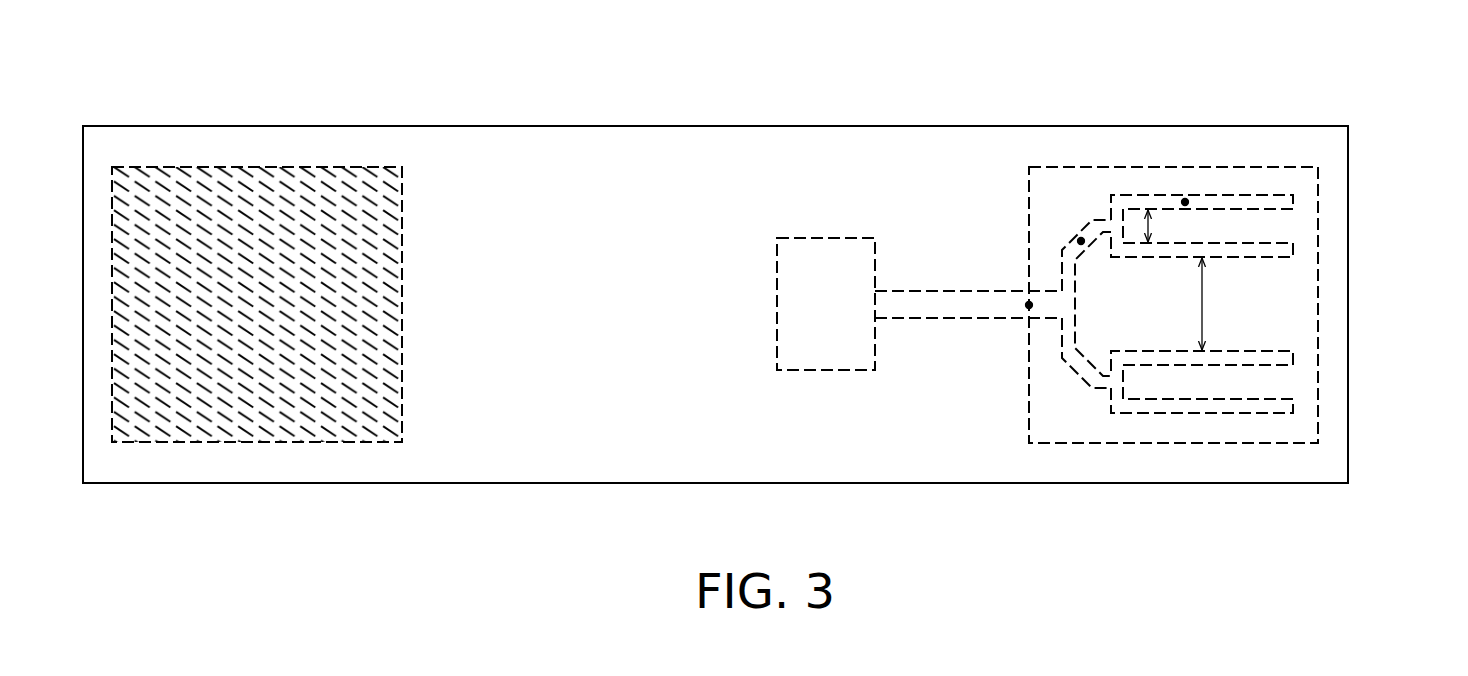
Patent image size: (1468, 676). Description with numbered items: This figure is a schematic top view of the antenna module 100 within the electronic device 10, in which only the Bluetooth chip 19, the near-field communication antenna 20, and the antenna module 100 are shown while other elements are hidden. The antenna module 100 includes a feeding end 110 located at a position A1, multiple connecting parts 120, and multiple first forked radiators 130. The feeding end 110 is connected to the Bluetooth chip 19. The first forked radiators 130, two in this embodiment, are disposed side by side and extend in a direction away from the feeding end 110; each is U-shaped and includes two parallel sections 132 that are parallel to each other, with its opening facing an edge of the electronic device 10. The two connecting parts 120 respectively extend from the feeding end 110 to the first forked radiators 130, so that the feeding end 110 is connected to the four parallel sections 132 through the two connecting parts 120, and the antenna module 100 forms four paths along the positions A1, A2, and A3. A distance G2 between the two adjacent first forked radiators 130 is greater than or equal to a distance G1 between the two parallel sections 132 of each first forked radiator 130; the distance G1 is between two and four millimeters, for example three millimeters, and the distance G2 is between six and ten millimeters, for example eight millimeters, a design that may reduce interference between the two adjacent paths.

The antenna module 100 is at (1327, 79).
The electronic device 10 is at (1408, 554).
The near-field communication antenna 20 is at (246, 443).
The Bluetooth chip 19 is at (806, 371).
The feeding end 110 is at (1045, 303).
The connecting part 120 is at (1088, 228).
The first forked radiator 130 is at (1283, 305).
The parallel section 132 is at (1290, 202).
The position A1 is at (1029, 305).
The position A2 is at (1081, 241).
The position A3 is at (1200, 192).
The distance G1 is at (1164, 228).
The distance G2 is at (1218, 304).